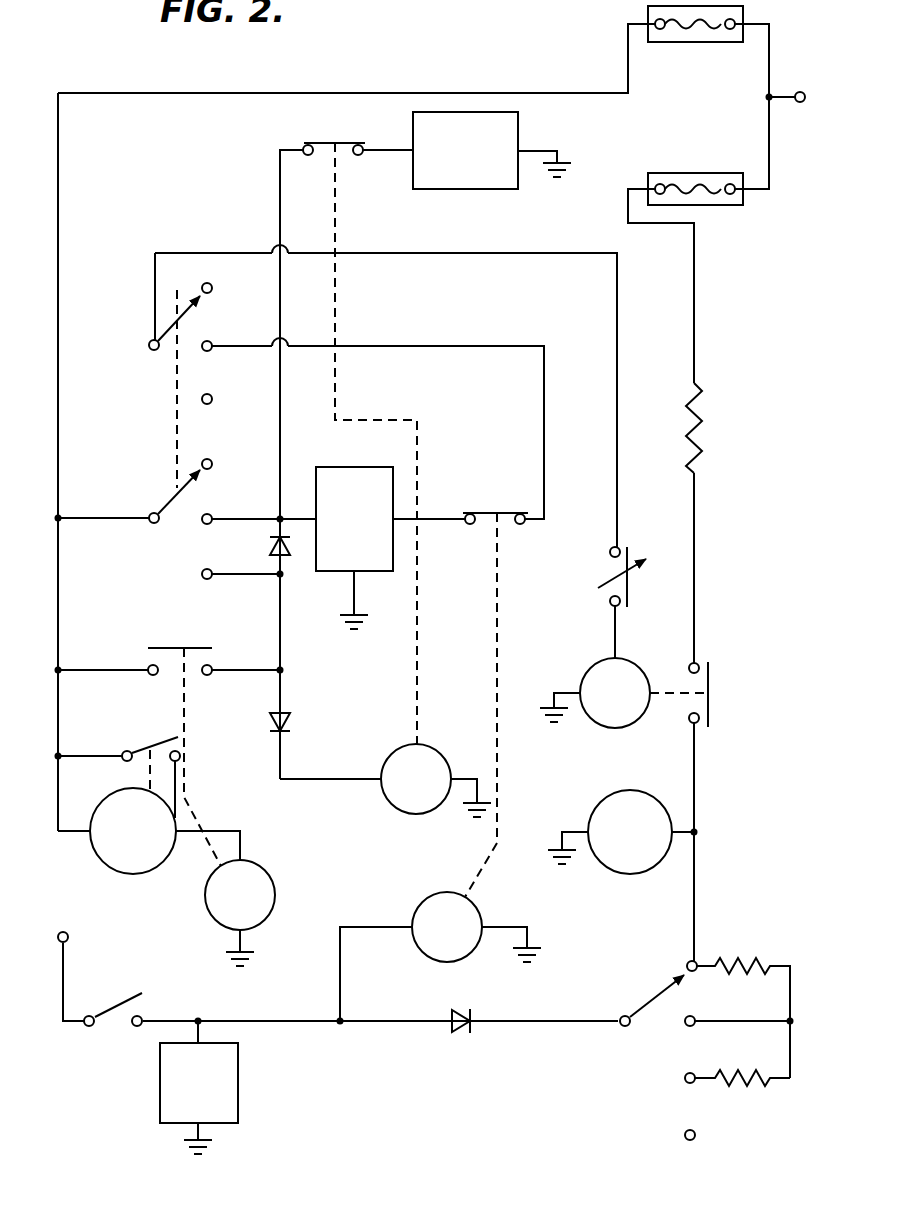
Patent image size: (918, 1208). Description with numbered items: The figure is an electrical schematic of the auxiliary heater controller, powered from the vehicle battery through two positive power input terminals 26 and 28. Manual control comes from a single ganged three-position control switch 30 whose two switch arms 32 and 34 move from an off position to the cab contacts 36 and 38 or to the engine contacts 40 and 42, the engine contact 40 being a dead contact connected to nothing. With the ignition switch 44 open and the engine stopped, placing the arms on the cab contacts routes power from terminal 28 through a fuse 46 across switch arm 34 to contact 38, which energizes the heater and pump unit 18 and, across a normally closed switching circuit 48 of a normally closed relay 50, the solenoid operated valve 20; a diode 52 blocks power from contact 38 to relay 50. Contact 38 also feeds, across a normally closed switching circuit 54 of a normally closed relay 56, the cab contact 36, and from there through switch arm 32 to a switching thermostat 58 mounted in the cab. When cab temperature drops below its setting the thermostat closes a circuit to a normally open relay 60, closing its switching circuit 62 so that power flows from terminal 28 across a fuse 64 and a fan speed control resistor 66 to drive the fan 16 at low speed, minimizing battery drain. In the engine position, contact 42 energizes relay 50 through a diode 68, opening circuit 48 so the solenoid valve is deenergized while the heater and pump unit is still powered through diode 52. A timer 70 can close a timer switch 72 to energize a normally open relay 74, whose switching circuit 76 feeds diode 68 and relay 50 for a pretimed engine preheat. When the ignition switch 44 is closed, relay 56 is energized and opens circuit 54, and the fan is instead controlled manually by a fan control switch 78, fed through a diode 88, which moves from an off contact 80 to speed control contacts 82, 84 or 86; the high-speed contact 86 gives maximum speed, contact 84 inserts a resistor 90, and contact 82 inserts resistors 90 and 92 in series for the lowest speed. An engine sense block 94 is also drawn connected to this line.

The fan 16 is at (610, 860).
The heater and pump unit 18 is at (325, 572).
The solenoid operated valve 20 is at (471, 190).
The positive power input terminal 26 is at (69, 937).
The positive power input terminal 28 is at (771, 100).
The ganged three-position control switch 30 is at (126, 406).
The switch arm 32 is at (178, 316).
The switch arm 34 is at (168, 500).
The cab contact 36 is at (204, 351).
The cab contact 38 is at (206, 526).
The engine contact 40 is at (204, 404).
The engine contact 42 is at (201, 578).
The ignition switch 44 is at (108, 1005).
The fuse 46 is at (703, 41).
The normally closed switching circuit 48 is at (320, 141).
The normally closed relay 50 is at (388, 795).
The diode 52 is at (288, 553).
The normally closed switching circuit 54 is at (506, 510).
The normally closed relay 56 is at (418, 945).
The switching thermostat 58 is at (607, 572).
The normally open relay 60 is at (633, 720).
The normally open relay switching circuit 62 is at (710, 690).
The fuse 64 is at (731, 206).
The resistor 66 is at (700, 425).
The diode 68 is at (290, 722).
The timer 70 is at (103, 852).
The timer switch 72 is at (145, 745).
The normally open relay 74 is at (268, 878).
The normally open switching circuit 76 is at (205, 645).
The fan control switch 78 is at (648, 1000).
The off contact 80 is at (682, 1137).
The speed control contact 82 is at (682, 1082).
The speed control contact 84 is at (682, 1030).
The high-speed switch contact 86 is at (685, 960).
The diode 88 is at (455, 1030).
The resistor 90 is at (750, 965).
The resistor 92 is at (745, 1075).
The engine sensor 94 is at (232, 1090).